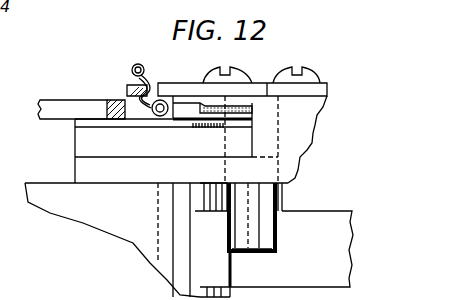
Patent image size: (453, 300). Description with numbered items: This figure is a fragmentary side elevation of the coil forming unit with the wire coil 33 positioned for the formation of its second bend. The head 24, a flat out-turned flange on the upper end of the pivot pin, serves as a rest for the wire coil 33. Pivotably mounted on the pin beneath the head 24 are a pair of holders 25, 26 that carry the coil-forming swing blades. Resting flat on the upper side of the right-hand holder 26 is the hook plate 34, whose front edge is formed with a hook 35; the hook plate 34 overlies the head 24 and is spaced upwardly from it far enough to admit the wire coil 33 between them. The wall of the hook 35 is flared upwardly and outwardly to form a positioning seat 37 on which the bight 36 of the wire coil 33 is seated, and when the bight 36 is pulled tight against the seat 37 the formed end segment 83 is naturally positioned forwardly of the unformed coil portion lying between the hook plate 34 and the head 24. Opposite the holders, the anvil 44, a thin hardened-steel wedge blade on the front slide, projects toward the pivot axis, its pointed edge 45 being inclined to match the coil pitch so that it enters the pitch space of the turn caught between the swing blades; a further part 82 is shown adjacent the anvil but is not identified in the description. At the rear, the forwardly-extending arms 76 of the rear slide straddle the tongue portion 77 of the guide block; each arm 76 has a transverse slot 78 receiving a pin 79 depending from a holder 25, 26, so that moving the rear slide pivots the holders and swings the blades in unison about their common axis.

The head 24 is at (75, 123).
The holder 25 is at (93, 142).
The holder 26 is at (300, 133).
The wire coil 33 is at (161, 117).
The hook plate 34 is at (191, 84).
The hook 35 is at (126, 90).
The bight 36 is at (170, 83).
The positioning seat 37 is at (133, 67).
The anvil 44 is at (72, 108).
The edge 45 is at (135, 115).
The arm 76 is at (328, 218).
The tongue portion 77 is at (140, 238).
The slot 78 is at (262, 248).
The pin 79 is at (277, 201).
The hatched insert 82 is at (110, 112).
The formed end segment 83 is at (138, 64).